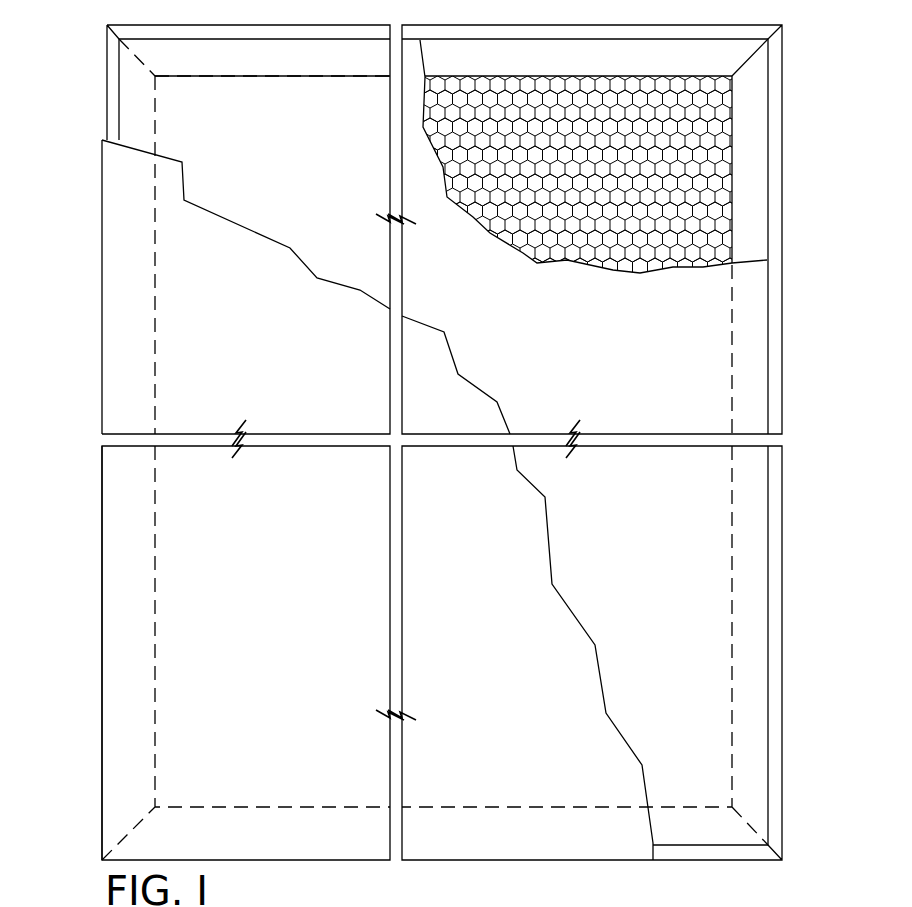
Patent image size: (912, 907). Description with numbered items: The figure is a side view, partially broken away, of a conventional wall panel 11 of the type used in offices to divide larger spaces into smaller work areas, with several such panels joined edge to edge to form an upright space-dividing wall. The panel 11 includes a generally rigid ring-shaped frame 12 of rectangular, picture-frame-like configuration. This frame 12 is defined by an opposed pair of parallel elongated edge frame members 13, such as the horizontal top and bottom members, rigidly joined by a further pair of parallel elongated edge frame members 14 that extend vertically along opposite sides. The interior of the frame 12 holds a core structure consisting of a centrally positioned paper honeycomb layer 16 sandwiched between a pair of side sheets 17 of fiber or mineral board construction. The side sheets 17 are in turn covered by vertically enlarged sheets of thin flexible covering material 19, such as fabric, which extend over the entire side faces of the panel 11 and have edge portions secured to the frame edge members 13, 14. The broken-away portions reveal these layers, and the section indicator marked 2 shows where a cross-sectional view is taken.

The wall panel 11 is at (795, 86).
The ring-shaped frame 12 is at (505, 23).
The edge frame members 13 is at (569, 62).
The edge frame members 14 is at (766, 208).
The paper honeycomb layer 16 is at (712, 177).
The side sheets 17 is at (715, 322).
The flexible covering material 19 is at (120, 241).
The section line 2- 2 is at (629, 3).